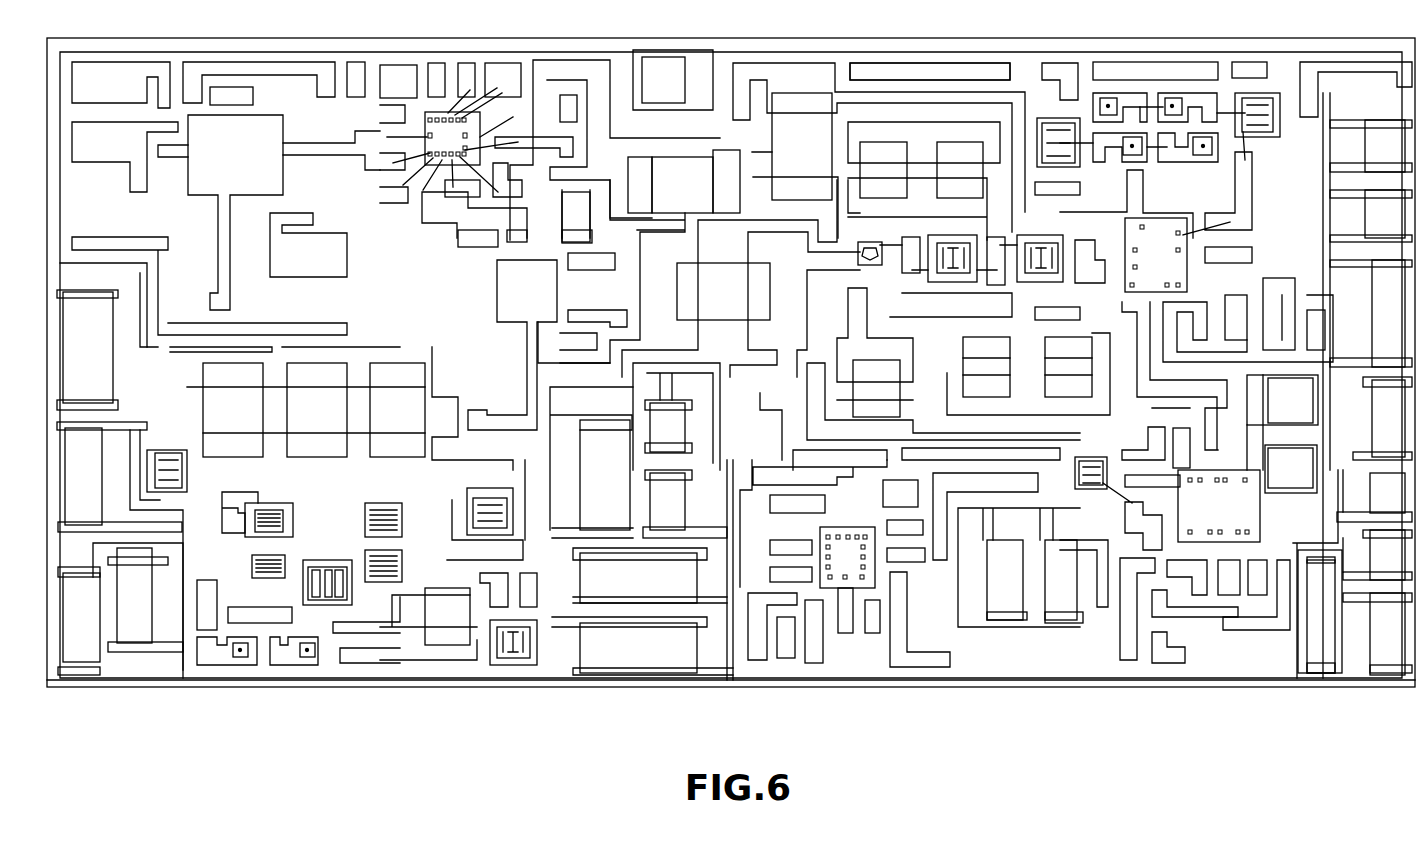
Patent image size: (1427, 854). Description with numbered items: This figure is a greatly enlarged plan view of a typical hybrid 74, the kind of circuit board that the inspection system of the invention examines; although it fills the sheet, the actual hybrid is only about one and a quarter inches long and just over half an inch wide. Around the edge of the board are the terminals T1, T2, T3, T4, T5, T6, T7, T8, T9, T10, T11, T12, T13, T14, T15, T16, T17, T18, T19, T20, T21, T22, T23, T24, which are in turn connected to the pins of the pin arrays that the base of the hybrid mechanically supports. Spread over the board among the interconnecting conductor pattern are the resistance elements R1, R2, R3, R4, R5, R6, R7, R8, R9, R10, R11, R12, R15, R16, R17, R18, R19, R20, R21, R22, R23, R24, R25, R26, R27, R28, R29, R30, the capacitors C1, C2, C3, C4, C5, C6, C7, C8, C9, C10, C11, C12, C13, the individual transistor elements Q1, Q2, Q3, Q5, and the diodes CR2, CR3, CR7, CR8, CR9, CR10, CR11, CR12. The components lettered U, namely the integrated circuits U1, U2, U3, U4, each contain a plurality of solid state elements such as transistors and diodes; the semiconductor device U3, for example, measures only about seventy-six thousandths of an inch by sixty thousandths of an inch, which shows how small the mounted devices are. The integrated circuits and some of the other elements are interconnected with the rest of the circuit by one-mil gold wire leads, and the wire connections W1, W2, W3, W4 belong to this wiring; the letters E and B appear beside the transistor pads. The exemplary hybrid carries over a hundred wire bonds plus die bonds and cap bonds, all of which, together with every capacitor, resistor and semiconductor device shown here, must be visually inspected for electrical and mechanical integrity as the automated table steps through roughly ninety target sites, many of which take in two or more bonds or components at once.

The hybrid 74 is at (1056, 770).
The terminal T1 is at (207, 653).
The terminal T2 is at (273, 653).
The terminal T3 is at (367, 660).
The terminal T4 is at (476, 712).
The terminal T5 is at (592, 712).
The terminal T6 is at (702, 712).
The terminal T7 is at (782, 653).
The terminal T8 is at (920, 658).
The terminal T9 is at (1132, 657).
The terminal T10 is at (1167, 655).
The terminal T11 is at (1296, 712).
The terminal T12 is at (1377, 712).
The terminal T13 is at (1370, 65).
The terminal T14 is at (1273, 43).
The terminal T15 is at (1187, 70).
The terminal T16 is at (1055, 70).
The terminal T17 is at (930, 42).
The terminal T18 is at (863, 70).
The terminal T19 is at (743, 72).
The terminal T20 is at (585, 75).
The terminal T21 is at (493, 70).
The terminal T22 is at (393, 65).
The terminal T23 is at (253, 68).
The terminal T24 is at (121, 57).
The resistance element R1 is at (668, 426).
The resistance element R2 is at (87, 350).
The resistance element R3 is at (296, 622).
The resistance element R4 is at (207, 513).
The resistance element R5 is at (119, 477).
The resistance element R6 is at (342, 625).
The resistance element R7 is at (605, 475).
The resistance element R8 is at (642, 646).
The resistance element R9 is at (482, 553).
The resistance element R10 is at (650, 575).
The resistance element R11 is at (1064, 581).
The resistance element R12 is at (145, 600).
The resistance element R15 is at (1374, 497).
The resistance element R16 is at (1382, 418).
The resistance element R17 is at (1371, 313).
The resistance element R18 is at (685, 504).
The resistance element R19 is at (1040, 455).
The resistance element R20 is at (1377, 555).
The resistance element R21 is at (1377, 634).
The resistance element R22 is at (1320, 611).
The resistance element R23 is at (952, 252).
The resistance element R24 is at (1048, 310).
The resistance element R25 is at (1371, 216).
The resistance element R26 is at (1371, 146).
The resistance element R27 is at (1203, 72).
The resistance element R28 is at (1052, 187).
The resistance element R29 is at (673, 80).
The resistance element R30 is at (1007, 580).
The capacitor C1 is at (233, 410).
The capacitor C2 is at (317, 410).
The capacitor C3 is at (397, 410).
The capacitor C4 is at (723, 291).
The capacitor C5 is at (875, 388).
The capacitor C6 is at (986, 367).
The capacitor C7 is at (802, 146).
The capacitor C8 is at (684, 181).
The capacitor C9 is at (428, 616).
The capacitor C10 is at (883, 170).
The capacitor C11 is at (960, 170).
The capacitor C12 is at (1068, 367).
The capacitor C13 is at (1236, 317).
The integrated circuit U1 is at (452, 140).
The integrated circuit U2 is at (797, 503).
The semiconductor device U3 is at (1287, 567).
The integrated circuit U4 is at (1135, 177).
The transistor element Q1 is at (269, 512).
The transistor element Q2 is at (268, 576).
The transistor element Q3 is at (383, 535).
The transistor element Q5 is at (868, 244).
The diode CR2 is at (277, 613).
The diode CR3 is at (207, 608).
The diode CR7 is at (1313, 340).
The diode CR8 is at (1222, 418).
The diode CR9 is at (1188, 156).
The diode CR10 is at (1203, 138).
The diode CR11 is at (1117, 156).
The diode CR12 is at (1113, 138).
The wire connection W1 is at (430, 113).
The wire connection W2 is at (567, 107).
The wire connection W3 is at (209, 68).
The wire connection W4 is at (465, 238).
The emitter pad E is at (872, 260).
The base pad B is at (258, 515).